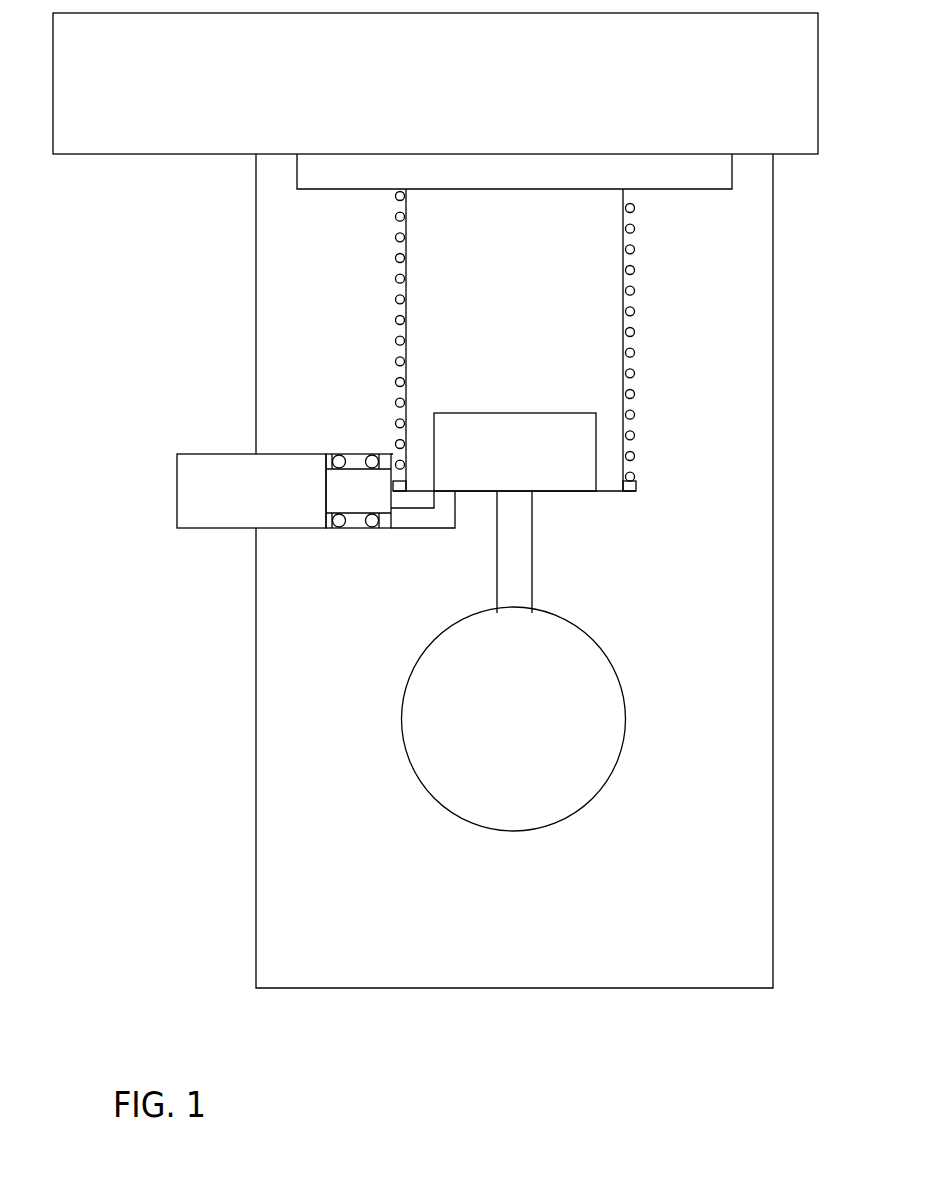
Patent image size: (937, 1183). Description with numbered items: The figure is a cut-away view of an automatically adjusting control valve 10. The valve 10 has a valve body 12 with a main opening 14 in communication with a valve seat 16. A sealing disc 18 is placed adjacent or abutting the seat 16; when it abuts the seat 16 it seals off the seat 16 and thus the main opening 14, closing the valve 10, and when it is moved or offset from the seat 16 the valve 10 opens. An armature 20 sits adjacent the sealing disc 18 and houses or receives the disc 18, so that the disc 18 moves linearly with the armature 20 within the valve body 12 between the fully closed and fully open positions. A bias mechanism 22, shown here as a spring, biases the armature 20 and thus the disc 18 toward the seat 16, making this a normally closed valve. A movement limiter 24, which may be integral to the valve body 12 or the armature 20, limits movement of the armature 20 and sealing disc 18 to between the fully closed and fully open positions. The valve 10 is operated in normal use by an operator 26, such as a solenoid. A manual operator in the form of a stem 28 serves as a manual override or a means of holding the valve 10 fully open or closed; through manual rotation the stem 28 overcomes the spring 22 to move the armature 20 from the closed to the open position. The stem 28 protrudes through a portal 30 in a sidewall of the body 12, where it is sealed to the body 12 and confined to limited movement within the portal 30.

The automatically adjusting control valve 10 is at (683, 1048).
The valve body 12 is at (313, 903).
The main opening 14 is at (459, 724).
The valve seat 16 is at (547, 505).
The sealing disc 18 is at (553, 446).
The armature 20 is at (571, 352).
The bias mechanism 22 is at (641, 270).
The movement limiter 24 is at (693, 172).
The operator 26 is at (170, 98).
The stem 28 is at (196, 500).
The portal 30 is at (229, 445).